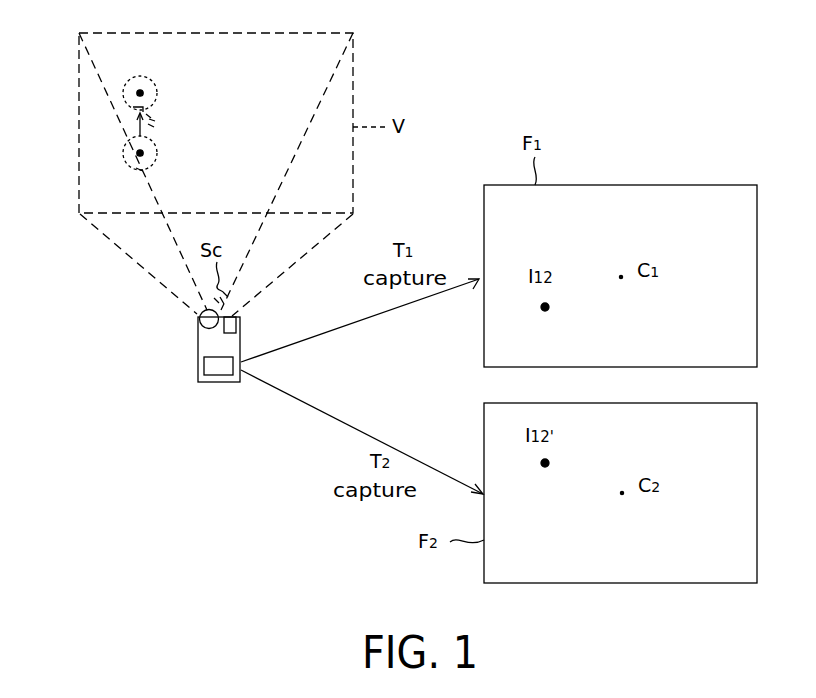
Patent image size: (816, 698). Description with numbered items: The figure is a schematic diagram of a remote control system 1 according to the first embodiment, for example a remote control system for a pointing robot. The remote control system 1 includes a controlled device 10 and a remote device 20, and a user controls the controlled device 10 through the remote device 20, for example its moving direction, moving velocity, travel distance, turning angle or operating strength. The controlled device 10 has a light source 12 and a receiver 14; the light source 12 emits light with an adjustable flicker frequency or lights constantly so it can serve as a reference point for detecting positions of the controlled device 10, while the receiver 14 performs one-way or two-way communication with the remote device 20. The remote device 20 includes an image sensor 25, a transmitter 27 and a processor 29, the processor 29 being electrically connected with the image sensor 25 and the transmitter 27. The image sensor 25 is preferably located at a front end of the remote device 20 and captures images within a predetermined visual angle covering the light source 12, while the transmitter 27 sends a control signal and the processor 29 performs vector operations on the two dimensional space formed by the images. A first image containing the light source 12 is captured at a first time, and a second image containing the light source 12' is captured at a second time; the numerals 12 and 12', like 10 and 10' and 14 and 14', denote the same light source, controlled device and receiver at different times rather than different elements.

The remote control system 1 is at (441, 78).
The controlled device 10 is at (172, 85).
The controlled device at a different time 10' is at (149, 55).
The light source 12 is at (91, 140).
The light source at a different time 12' is at (115, 48).
The receiver 14 is at (91, 173).
The receiver at a different time 14' is at (91, 98).
The remote device 20 is at (173, 376).
The image sensor 25 is at (200, 319).
The transmitter 27 is at (224, 333).
The processor 29 is at (204, 368).